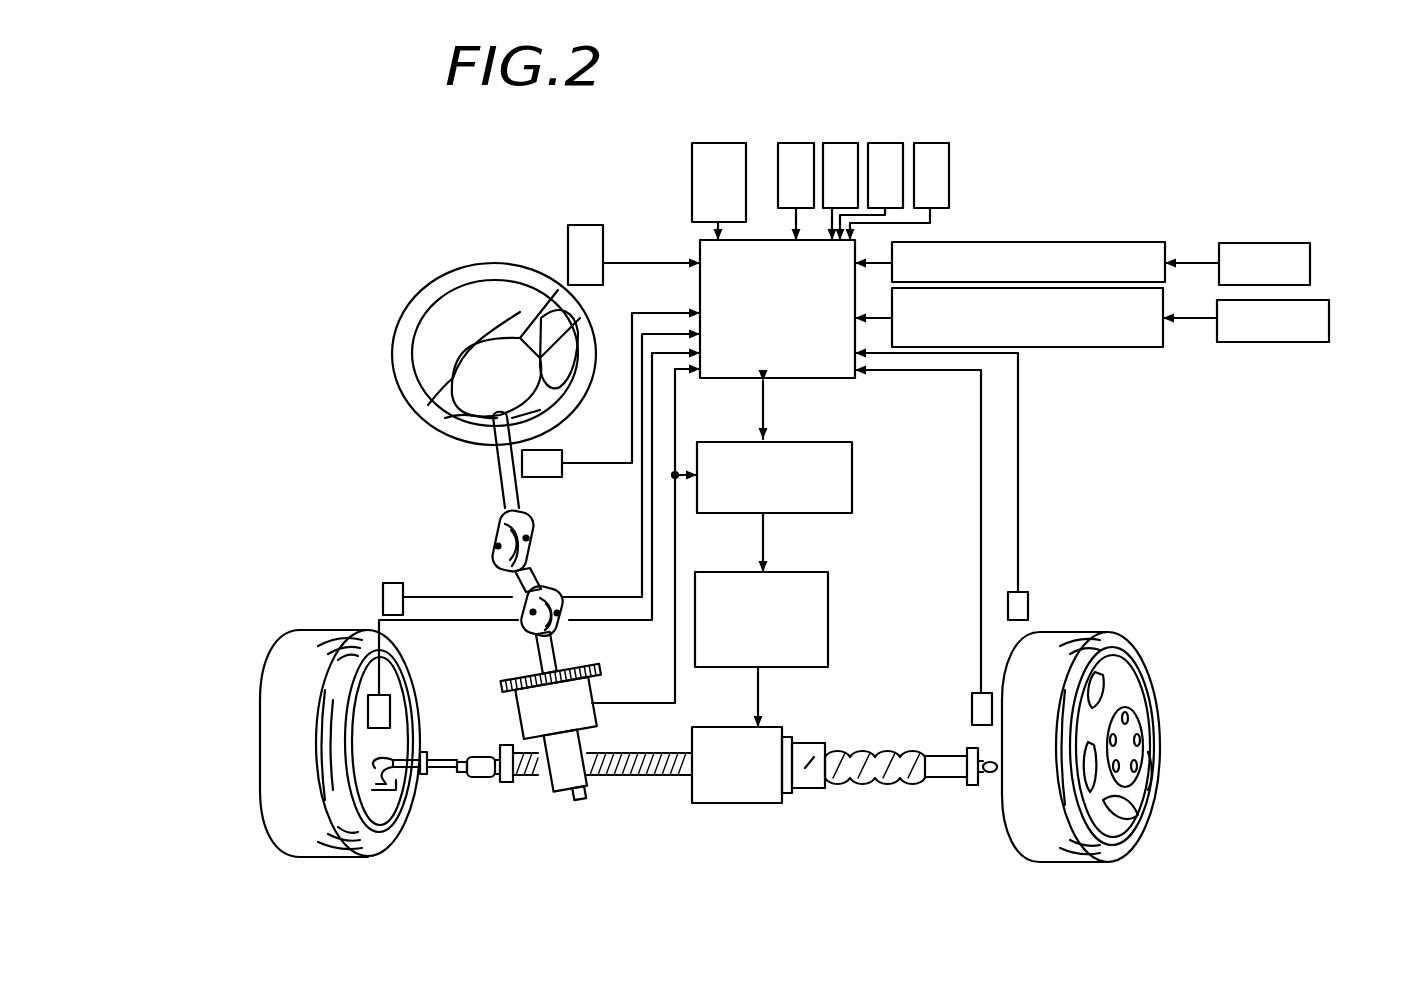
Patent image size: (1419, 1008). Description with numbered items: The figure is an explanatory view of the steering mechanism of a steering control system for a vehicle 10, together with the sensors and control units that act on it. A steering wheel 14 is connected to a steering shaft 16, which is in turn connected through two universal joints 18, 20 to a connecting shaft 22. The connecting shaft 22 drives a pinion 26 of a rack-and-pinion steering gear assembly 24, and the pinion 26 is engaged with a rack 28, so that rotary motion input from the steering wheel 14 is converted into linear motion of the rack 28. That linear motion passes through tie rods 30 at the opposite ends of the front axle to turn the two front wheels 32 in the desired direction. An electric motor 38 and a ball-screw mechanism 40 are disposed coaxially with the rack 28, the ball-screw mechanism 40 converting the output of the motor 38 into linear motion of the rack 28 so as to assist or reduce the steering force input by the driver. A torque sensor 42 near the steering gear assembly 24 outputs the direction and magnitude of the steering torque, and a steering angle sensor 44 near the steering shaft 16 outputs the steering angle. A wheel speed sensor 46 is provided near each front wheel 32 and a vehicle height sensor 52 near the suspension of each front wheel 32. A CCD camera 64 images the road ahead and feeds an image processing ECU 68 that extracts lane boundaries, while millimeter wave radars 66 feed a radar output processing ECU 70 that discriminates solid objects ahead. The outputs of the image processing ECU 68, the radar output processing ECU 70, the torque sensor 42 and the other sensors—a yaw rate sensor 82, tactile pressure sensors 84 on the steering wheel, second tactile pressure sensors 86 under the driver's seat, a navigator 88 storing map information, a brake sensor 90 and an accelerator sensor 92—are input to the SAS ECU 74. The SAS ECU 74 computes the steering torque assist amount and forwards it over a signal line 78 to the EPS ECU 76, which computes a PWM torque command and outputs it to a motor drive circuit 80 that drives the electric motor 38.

The vehicle 10 is at (1080, 538).
The steering wheel 14 is at (420, 312).
The steering shaft 16 is at (497, 471).
The universal joint 18 is at (531, 525).
The universal joint 20 is at (517, 607).
The connecting shaft 22 is at (557, 662).
The rack-and-pinion steering gear assembly 24 is at (525, 786).
The pinion 26 is at (568, 803).
The rack 28 is at (600, 752).
The tie rod 30 is at (400, 760).
The front wheel 32 is at (335, 628).
The electric motor 38 is at (747, 800).
The ball-screw mechanism 40 is at (879, 749).
The torque sensor 42 is at (592, 690).
The steering angle sensor 44 is at (547, 449).
The wheel speed sensor 46 is at (368, 700).
The vehicle height sensor 52 is at (383, 590).
The CCD camera 64 is at (1310, 263).
The millimeter wave radar 66 is at (1329, 318).
The image processing ECU 68 is at (1072, 242).
The radar output processing ECU 70 is at (1095, 347).
The SAS ECU 74 is at (820, 378).
The EPS ECU 76 is at (852, 478).
The signal line 78 is at (763, 404).
The motor drive circuit 80 is at (828, 600).
The yaw rate sensor 82 is at (800, 143).
The tactile pressure sensor 84 is at (583, 225).
The second tactile pressure sensor 86 is at (840, 143).
The navigator 88 is at (716, 143).
The brake sensor 90 is at (888, 143).
The accelerator sensor 92 is at (935, 143).